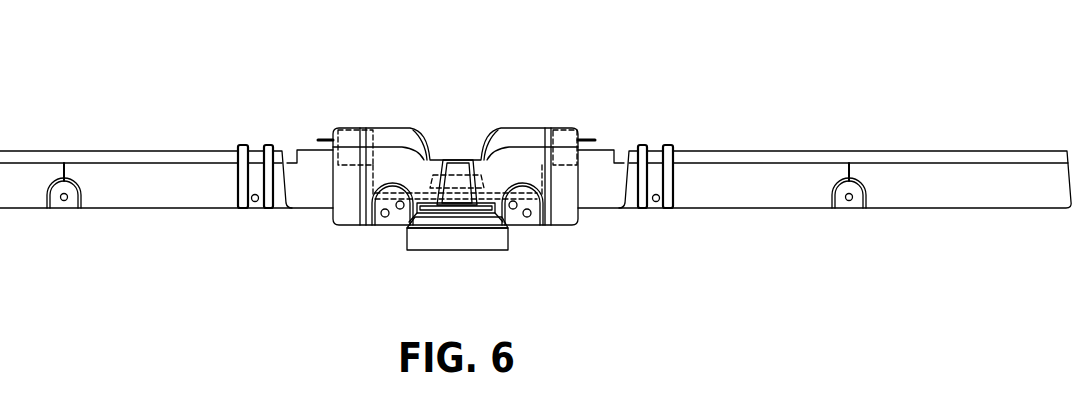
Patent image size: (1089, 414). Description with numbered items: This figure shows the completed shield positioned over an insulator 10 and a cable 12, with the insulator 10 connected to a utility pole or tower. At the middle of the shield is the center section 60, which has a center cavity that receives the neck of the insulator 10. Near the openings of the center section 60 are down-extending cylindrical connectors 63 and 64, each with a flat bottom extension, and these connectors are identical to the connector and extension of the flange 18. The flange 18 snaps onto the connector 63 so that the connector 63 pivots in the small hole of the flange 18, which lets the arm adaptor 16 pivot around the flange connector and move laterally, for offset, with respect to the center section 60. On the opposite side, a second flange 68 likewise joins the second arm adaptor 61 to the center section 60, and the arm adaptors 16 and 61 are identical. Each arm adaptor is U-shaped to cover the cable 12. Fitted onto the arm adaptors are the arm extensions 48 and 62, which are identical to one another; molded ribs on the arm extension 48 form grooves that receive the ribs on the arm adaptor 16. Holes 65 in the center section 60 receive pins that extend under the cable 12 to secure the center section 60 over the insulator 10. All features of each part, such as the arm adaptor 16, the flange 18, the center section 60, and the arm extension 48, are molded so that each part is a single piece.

The center section 60 is at (513, 86).
The arm extension 48 is at (116, 151).
The arm extension 62 is at (742, 151).
The arm adaptor 16 is at (307, 145).
The arm adaptor 61 is at (606, 146).
The flange 18 is at (342, 130).
The flange 68 is at (573, 130).
The cylindrical connector 63 is at (363, 128).
The cylindrical connector 64 is at (551, 128).
The holes 65 is at (386, 218).
The cable 12 is at (535, 223).
The insulator 10 is at (483, 240).